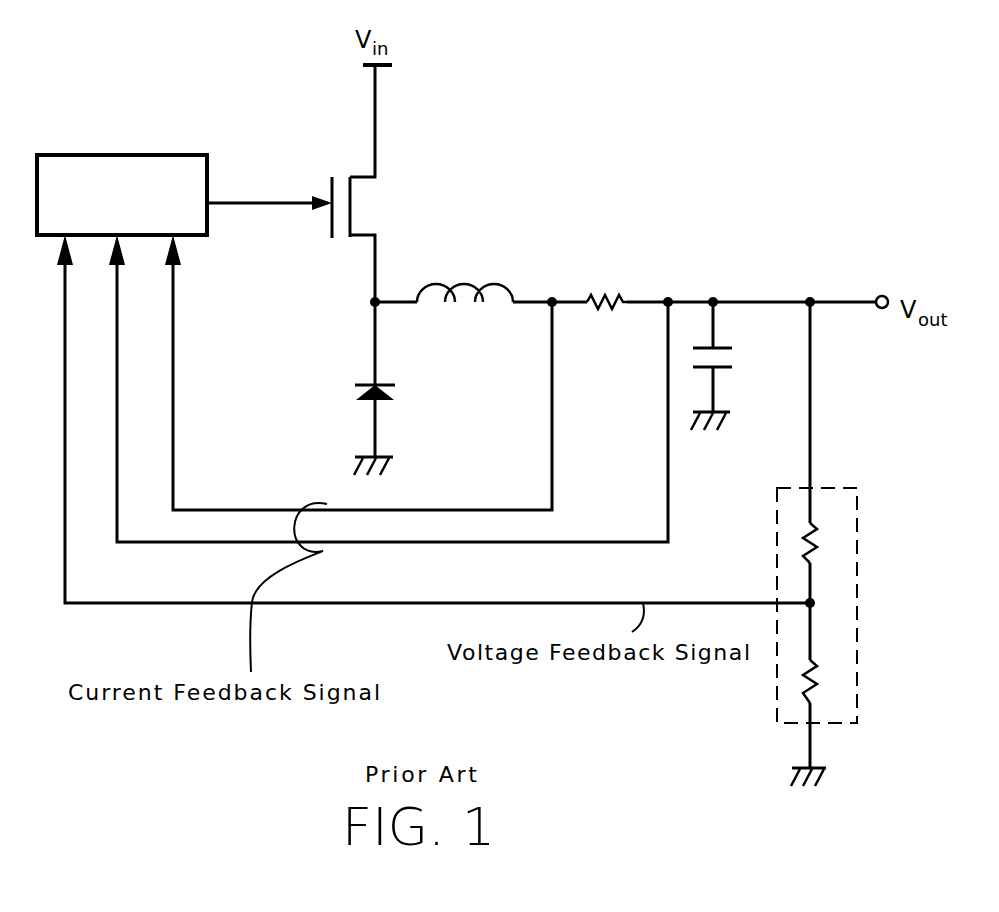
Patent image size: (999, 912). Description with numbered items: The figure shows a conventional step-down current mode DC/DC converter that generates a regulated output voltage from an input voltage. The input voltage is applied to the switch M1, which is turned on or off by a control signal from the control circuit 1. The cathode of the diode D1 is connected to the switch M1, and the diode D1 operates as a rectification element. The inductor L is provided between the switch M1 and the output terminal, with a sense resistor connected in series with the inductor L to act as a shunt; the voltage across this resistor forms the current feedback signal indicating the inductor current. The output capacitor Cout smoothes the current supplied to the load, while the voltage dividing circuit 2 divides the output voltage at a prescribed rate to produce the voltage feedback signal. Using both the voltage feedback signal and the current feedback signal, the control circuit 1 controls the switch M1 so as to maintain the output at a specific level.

The control circuit 1 is at (194, 189).
The voltage dividing circuit 2 is at (848, 520).
The switch M1 is at (368, 183).
The diode D1 is at (355, 388).
The inductor L is at (465, 273).
The output capacitor Cout is at (736, 366).